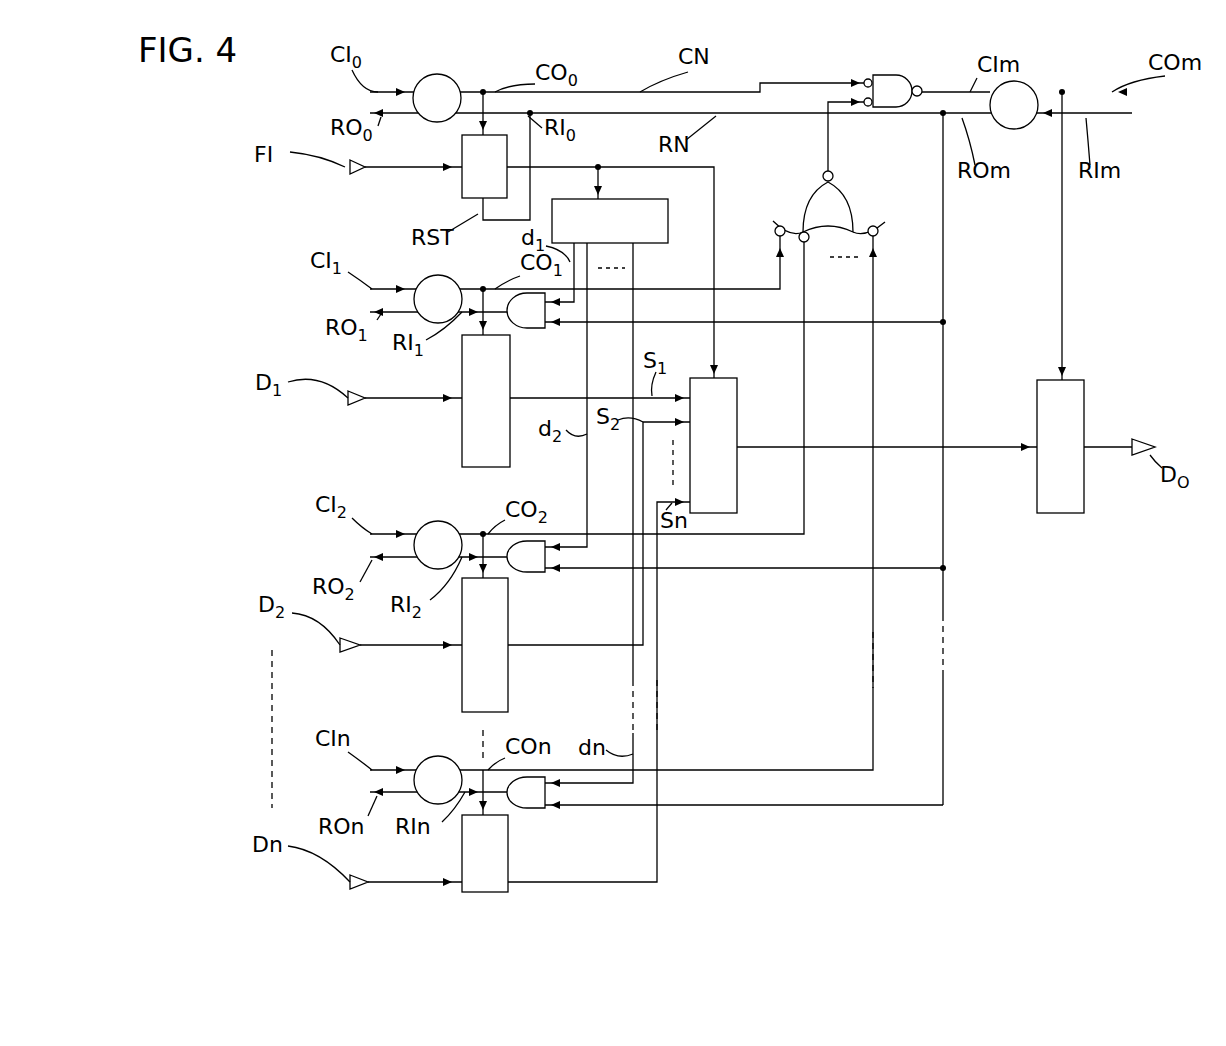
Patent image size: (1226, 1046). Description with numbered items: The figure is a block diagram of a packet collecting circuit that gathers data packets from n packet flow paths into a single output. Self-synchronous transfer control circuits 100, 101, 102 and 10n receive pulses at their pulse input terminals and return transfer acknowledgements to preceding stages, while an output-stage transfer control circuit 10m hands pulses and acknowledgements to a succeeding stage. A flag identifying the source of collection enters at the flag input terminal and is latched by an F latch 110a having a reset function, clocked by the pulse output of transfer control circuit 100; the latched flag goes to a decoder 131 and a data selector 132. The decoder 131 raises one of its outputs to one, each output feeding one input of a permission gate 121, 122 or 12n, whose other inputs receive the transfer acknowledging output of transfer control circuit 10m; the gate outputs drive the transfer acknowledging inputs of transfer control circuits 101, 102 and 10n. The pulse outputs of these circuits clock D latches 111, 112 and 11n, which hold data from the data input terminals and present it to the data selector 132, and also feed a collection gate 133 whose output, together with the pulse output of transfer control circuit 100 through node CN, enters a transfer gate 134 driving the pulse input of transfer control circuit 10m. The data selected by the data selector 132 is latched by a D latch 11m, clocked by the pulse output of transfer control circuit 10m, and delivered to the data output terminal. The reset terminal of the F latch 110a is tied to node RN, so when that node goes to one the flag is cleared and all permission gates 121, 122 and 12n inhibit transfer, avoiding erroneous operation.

The transfer control circuit 100 is at (450, 78).
The transfer control circuit 101 is at (445, 278).
The transfer control circuit 102 is at (440, 522).
The transfer control circuit 10n is at (428, 760).
The transfer control circuit 10m is at (1038, 90).
The F latch 110a is at (462, 182).
The D latch 111 is at (512, 450).
The D latch 112 is at (510, 678).
The D latch 11n is at (510, 848).
The D latch 11m is at (1082, 378).
The permission gate 121 is at (530, 330).
The permission gate 122 is at (530, 574).
The permission gate 12n is at (528, 810).
The decoder 131 is at (663, 243).
The data selector 132 is at (735, 378).
The collection gate 133 is at (853, 202).
The transfer gate 134 is at (908, 80).